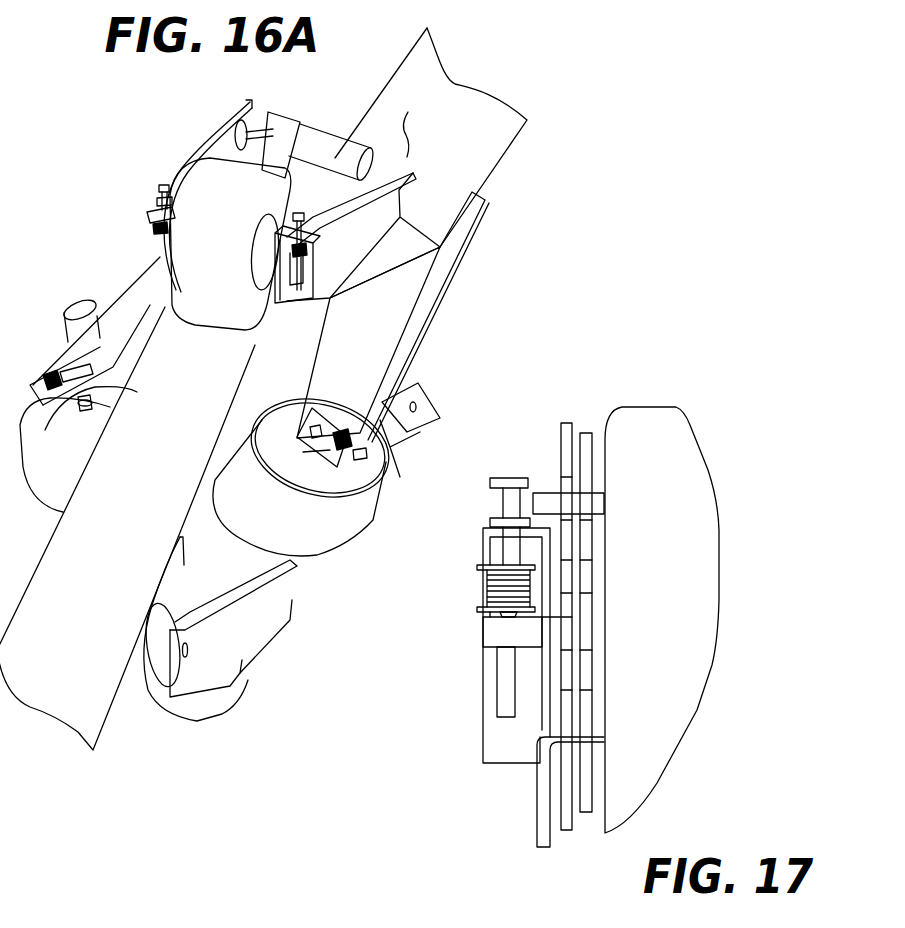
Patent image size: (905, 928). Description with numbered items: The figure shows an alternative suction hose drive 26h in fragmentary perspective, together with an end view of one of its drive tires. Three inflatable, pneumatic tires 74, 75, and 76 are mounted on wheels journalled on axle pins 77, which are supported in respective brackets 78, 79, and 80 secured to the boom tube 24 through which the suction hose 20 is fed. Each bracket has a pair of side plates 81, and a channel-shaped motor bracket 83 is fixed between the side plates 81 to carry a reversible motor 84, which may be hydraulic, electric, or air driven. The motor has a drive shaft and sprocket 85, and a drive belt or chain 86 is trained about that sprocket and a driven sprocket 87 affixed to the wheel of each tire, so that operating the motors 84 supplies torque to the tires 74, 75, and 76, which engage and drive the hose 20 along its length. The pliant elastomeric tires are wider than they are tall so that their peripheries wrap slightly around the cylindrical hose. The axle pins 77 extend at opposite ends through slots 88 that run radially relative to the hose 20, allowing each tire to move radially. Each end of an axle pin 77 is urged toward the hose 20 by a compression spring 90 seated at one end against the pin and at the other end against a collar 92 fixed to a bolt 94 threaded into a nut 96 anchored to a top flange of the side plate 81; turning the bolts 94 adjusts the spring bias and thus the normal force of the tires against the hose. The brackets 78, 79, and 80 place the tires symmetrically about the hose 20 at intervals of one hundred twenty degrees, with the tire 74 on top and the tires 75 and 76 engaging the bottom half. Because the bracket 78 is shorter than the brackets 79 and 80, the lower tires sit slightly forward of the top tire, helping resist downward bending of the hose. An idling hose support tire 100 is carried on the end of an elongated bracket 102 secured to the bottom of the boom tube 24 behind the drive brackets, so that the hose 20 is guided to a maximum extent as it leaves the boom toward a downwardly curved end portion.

In FIG. 16A, the suction hose 20 is at (46, 664).
In FIG. 16A, the boom tube 24 is at (441, 150).
In FIG. 16A, the suction hose drive 26h is at (123, 220).
In FIG. 16A, the tire 74 is at (196, 304).
In FIG. 17, the tire 74 is at (642, 607).
In FIG. 16A, the tire 75 is at (44, 474).
In FIG. 16A, the tire 76 is at (275, 539).
In FIG. 16A, the axle pin 77 is at (267, 247).
In FIG. 17, the axle pin 77 is at (490, 635).
In FIG. 16A, the bracket 78 is at (405, 120).
In FIG. 16A, the bracket 79 is at (120, 293).
In FIG. 16A, the bracket 80 is at (437, 300).
In FIG. 16A, the side plate 81 is at (352, 235).
In FIG. 17, the side plate 81 is at (540, 805).
In FIG. 16A, the motor bracket 83 is at (405, 378).
In FIG. 16A, the motor 84 is at (308, 137).
In FIG. 16A, the drive shaft and sprocket 85 is at (258, 110).
In FIG. 16A, the drive belt or chain 86 is at (193, 187).
In FIG. 17, the drive belt or chain 86 is at (583, 772).
In FIG. 16A, the driven sprocket 87 is at (350, 487).
In FIG. 17, the driven sprocket 87 is at (583, 772).
In FIG. 16A, the slot 88 is at (298, 197).
In FIG. 16A, the compression spring 90 is at (308, 252).
In FIG. 17, the compression spring 90 is at (487, 598).
In FIG. 17, the collar 92 is at (477, 566).
In FIG. 17, the bolt 94 is at (490, 483).
In FIG. 17, the nut 96 is at (490, 519).
In FIG. 16A, the idling hose support tire 100 is at (130, 713).
In FIG. 16A, the elongated bracket 102 is at (257, 647).